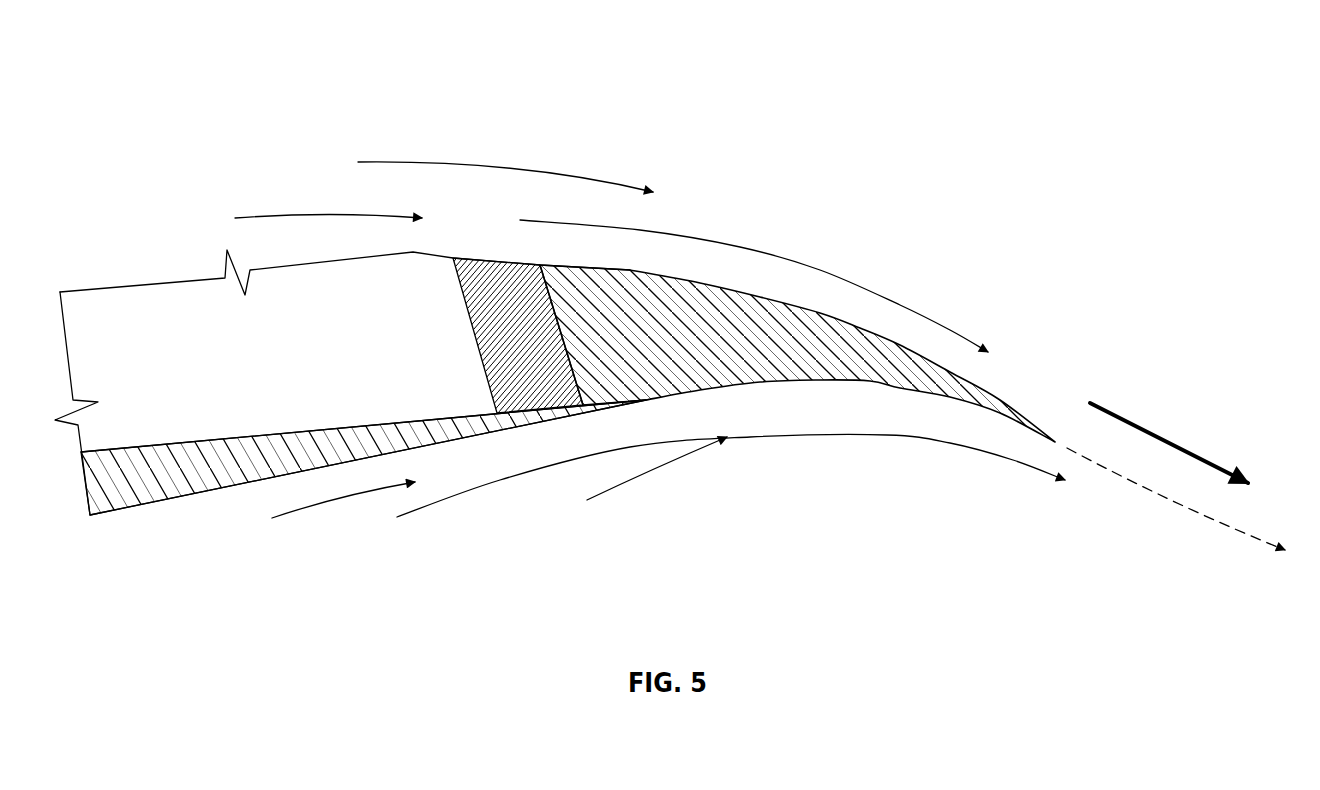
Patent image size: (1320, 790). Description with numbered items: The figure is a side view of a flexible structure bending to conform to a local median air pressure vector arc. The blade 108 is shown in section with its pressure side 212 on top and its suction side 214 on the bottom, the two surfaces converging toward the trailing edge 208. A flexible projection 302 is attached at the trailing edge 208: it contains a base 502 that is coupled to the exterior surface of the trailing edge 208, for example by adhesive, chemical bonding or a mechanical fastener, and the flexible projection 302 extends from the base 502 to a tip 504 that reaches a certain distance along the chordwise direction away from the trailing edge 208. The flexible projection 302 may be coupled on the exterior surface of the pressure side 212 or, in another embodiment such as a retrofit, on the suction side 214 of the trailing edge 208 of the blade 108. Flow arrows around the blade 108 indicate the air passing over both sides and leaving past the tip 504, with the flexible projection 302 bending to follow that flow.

The blade 108 is at (257, 395).
The trailing edge 208 is at (442, 395).
The pressure side 212 is at (150, 293).
The suction side 214 is at (193, 487).
The flexible projection 302 is at (791, 349).
The base 502 is at (534, 345).
The tip 504 is at (1007, 402).